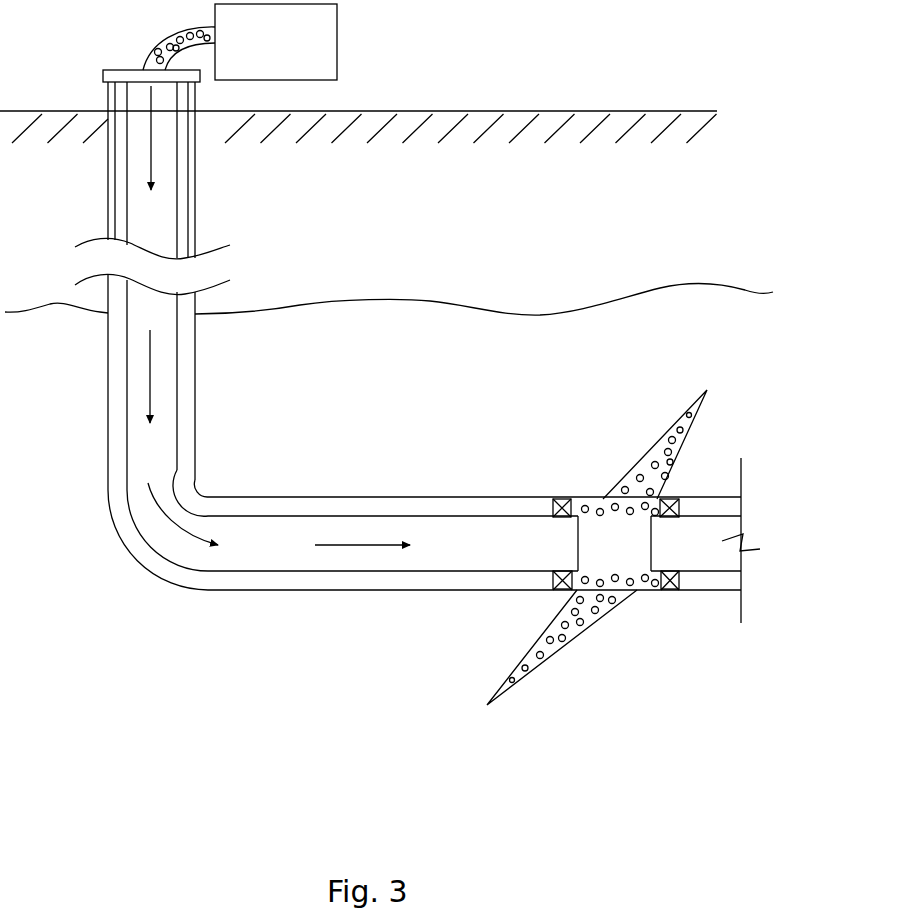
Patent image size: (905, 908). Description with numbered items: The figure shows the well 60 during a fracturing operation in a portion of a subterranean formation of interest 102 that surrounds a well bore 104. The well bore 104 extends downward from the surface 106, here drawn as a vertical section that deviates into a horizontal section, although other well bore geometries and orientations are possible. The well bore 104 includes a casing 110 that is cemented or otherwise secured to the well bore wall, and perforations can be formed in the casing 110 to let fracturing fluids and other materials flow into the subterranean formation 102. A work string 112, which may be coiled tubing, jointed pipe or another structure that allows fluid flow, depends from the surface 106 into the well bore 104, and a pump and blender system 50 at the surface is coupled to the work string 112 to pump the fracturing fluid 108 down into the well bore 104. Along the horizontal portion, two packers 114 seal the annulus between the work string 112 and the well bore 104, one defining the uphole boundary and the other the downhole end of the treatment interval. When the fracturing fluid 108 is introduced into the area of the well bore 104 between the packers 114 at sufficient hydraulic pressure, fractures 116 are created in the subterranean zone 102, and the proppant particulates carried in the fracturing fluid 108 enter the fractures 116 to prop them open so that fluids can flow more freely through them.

The pump and blender system 50 is at (285, 54).
The well 60 is at (122, 578).
The subterranean formation 102 is at (437, 344).
The well bore 104 is at (122, 188).
The surface 106 is at (513, 111).
The fracturing fluid 108 is at (167, 38).
The casing 110 is at (115, 221).
The work string 112 is at (125, 425).
The packers 114 is at (563, 498).
The fractures 116 is at (642, 446).